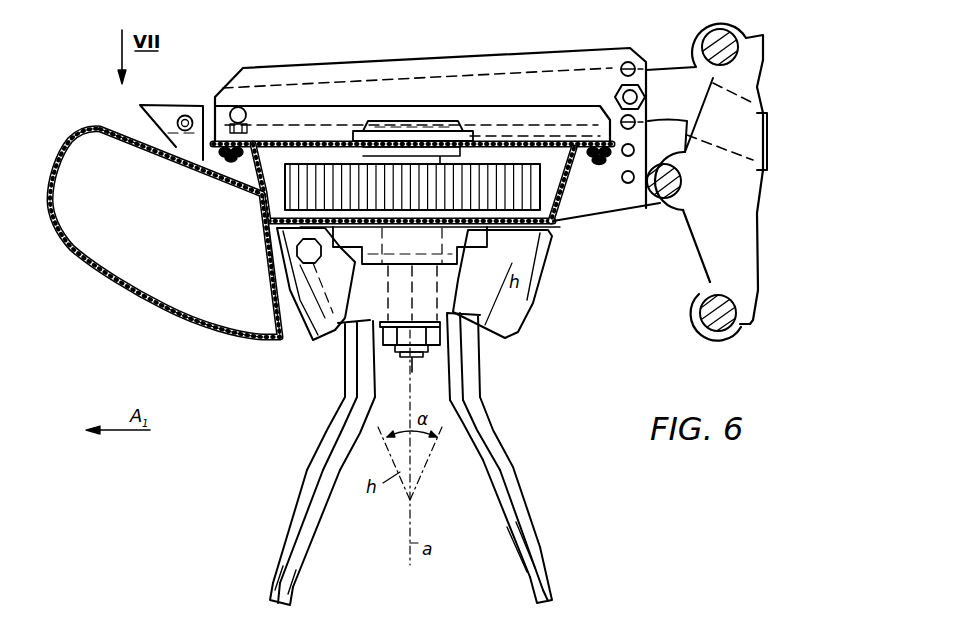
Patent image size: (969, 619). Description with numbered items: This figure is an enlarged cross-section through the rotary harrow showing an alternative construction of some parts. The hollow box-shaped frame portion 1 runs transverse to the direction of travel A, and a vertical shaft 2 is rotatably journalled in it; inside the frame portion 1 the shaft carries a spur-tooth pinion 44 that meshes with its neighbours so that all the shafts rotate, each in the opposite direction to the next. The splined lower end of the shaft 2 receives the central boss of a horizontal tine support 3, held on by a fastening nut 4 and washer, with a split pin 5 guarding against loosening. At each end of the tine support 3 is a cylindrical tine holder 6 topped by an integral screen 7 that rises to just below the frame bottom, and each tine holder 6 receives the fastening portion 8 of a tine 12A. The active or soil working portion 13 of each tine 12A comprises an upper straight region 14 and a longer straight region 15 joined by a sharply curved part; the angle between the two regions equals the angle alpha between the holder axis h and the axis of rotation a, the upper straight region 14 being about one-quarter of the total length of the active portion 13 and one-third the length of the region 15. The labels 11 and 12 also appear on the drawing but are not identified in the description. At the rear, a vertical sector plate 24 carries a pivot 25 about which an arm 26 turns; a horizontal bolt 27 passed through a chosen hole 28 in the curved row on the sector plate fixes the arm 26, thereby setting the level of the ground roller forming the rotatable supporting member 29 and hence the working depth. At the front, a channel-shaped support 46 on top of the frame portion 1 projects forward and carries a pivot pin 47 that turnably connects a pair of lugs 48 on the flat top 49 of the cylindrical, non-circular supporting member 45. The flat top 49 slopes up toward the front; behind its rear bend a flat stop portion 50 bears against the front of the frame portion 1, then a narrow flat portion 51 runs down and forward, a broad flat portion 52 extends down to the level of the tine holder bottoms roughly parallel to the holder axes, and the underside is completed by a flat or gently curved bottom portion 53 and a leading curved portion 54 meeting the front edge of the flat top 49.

The hollow box-shaped frame portion 1 is at (345, 141).
The vertical shaft 2 is at (413, 127).
The tine support 3 is at (415, 342).
The fastening nut 4 is at (396, 352).
The split pin 5 is at (420, 355).
The tine holder 6 is at (505, 337).
The screen 7 is at (549, 254).
The fastening portion 8 is at (312, 263).
The fork leg 11 is at (520, 577).
The fork leg 12 is at (292, 590).
The tine 12A is at (342, 418).
The active or soil working portion 13 is at (322, 472).
The upper straight region 14 is at (340, 376).
The straight region 15 is at (297, 523).
The sector plate 24 is at (353, 52).
The pivot 25 is at (247, 122).
The arm 26 is at (675, 77).
The horizontal bolt 27 is at (613, 96).
The hole 28 is at (635, 148).
The rotatable supporting member 29 is at (703, 262).
The spur-tooth pinion 44 is at (540, 203).
The supporting member 45 is at (88, 277).
The support 46 is at (323, 100).
The pivot pin 47 is at (188, 113).
The lug 48 is at (173, 113).
The flat top 49 is at (124, 126).
The flat stop portion 50 is at (255, 196).
The narrow flat portion 51 is at (252, 223).
The broad flat portion 52 is at (262, 277).
The flat or gently curved bottom portion 53 is at (212, 333).
The leading curved portion 54 is at (68, 148).